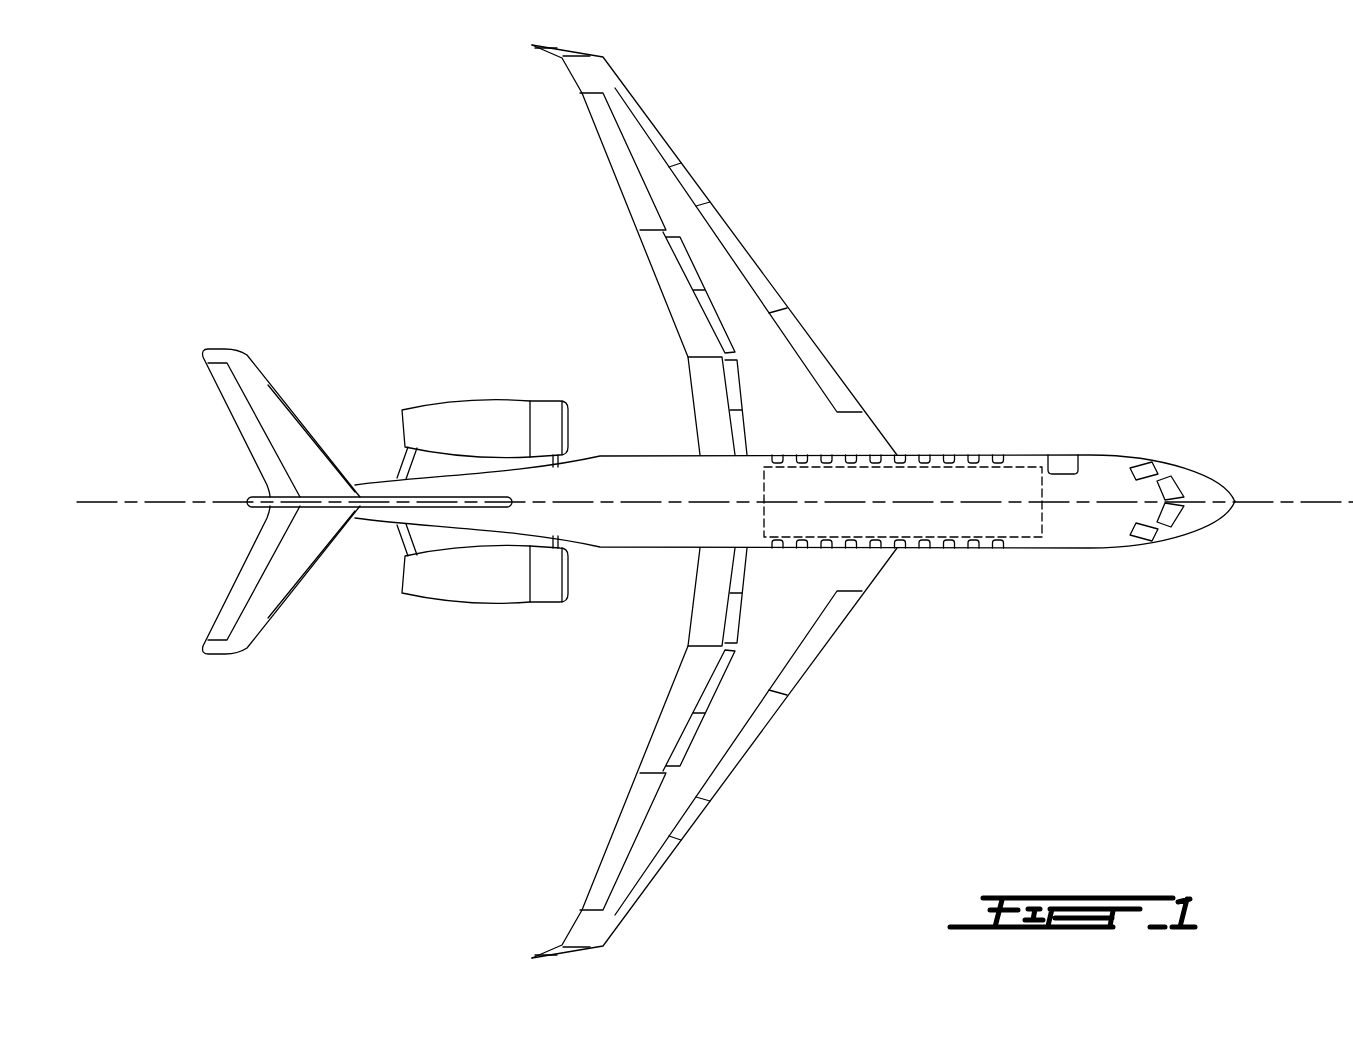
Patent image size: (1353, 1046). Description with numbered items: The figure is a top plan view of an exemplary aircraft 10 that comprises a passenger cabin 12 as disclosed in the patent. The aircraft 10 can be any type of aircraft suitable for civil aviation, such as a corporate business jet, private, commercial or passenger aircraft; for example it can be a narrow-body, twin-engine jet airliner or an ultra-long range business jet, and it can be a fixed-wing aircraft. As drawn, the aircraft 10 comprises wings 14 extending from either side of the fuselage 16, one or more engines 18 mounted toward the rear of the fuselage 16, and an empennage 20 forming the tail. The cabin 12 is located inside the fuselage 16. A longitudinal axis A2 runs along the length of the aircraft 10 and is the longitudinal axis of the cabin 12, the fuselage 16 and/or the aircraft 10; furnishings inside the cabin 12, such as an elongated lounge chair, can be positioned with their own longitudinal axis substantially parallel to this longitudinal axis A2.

The aircraft 10 is at (1052, 136).
The cabin 12 is at (888, 518).
The wings 14 is at (792, 268).
The fuselage 16 is at (1090, 528).
The engines 18 is at (473, 418).
The empennage 20 is at (195, 423).
The longitudinal axis A2 is at (107, 503).